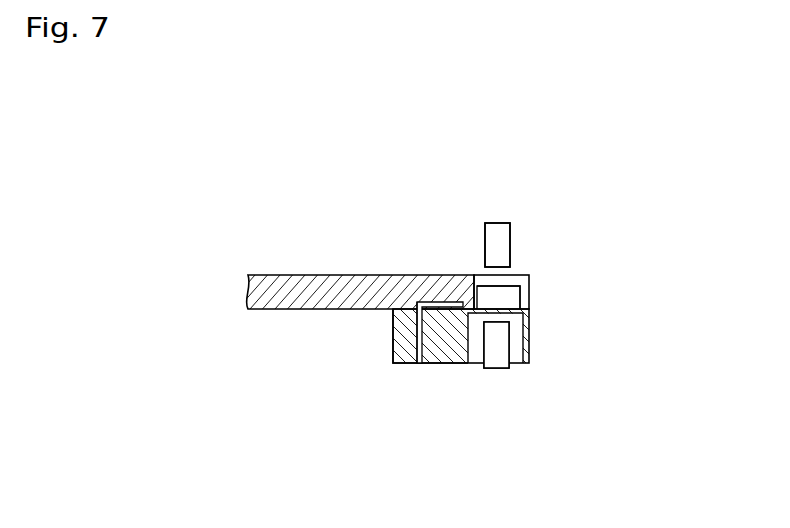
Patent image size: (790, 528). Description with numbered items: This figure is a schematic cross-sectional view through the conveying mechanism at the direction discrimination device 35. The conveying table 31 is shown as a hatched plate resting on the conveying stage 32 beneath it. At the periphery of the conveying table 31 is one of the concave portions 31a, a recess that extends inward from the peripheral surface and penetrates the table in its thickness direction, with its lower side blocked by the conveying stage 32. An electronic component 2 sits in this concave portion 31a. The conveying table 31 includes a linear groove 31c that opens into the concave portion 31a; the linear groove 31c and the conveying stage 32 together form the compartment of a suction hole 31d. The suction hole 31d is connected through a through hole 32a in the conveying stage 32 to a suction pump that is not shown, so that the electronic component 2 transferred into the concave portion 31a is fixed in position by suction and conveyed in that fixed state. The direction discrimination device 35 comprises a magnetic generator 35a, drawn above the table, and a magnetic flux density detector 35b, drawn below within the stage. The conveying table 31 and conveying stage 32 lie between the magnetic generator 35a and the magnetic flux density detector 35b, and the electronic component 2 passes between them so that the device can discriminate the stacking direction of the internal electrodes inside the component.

The conveying table 31 is at (290, 275).
The concave portion 31a is at (500, 287).
The linear groove 31c is at (431, 307).
The suction hole 31d is at (415, 303).
The electronic component 2 is at (520, 302).
The conveying stage 32 is at (532, 332).
The through hole 32a is at (443, 363).
The direction discrimination device 35 is at (486, 205).
The magnetic generator 35a is at (498, 223).
The magnetic flux density detector 35b is at (497, 368).